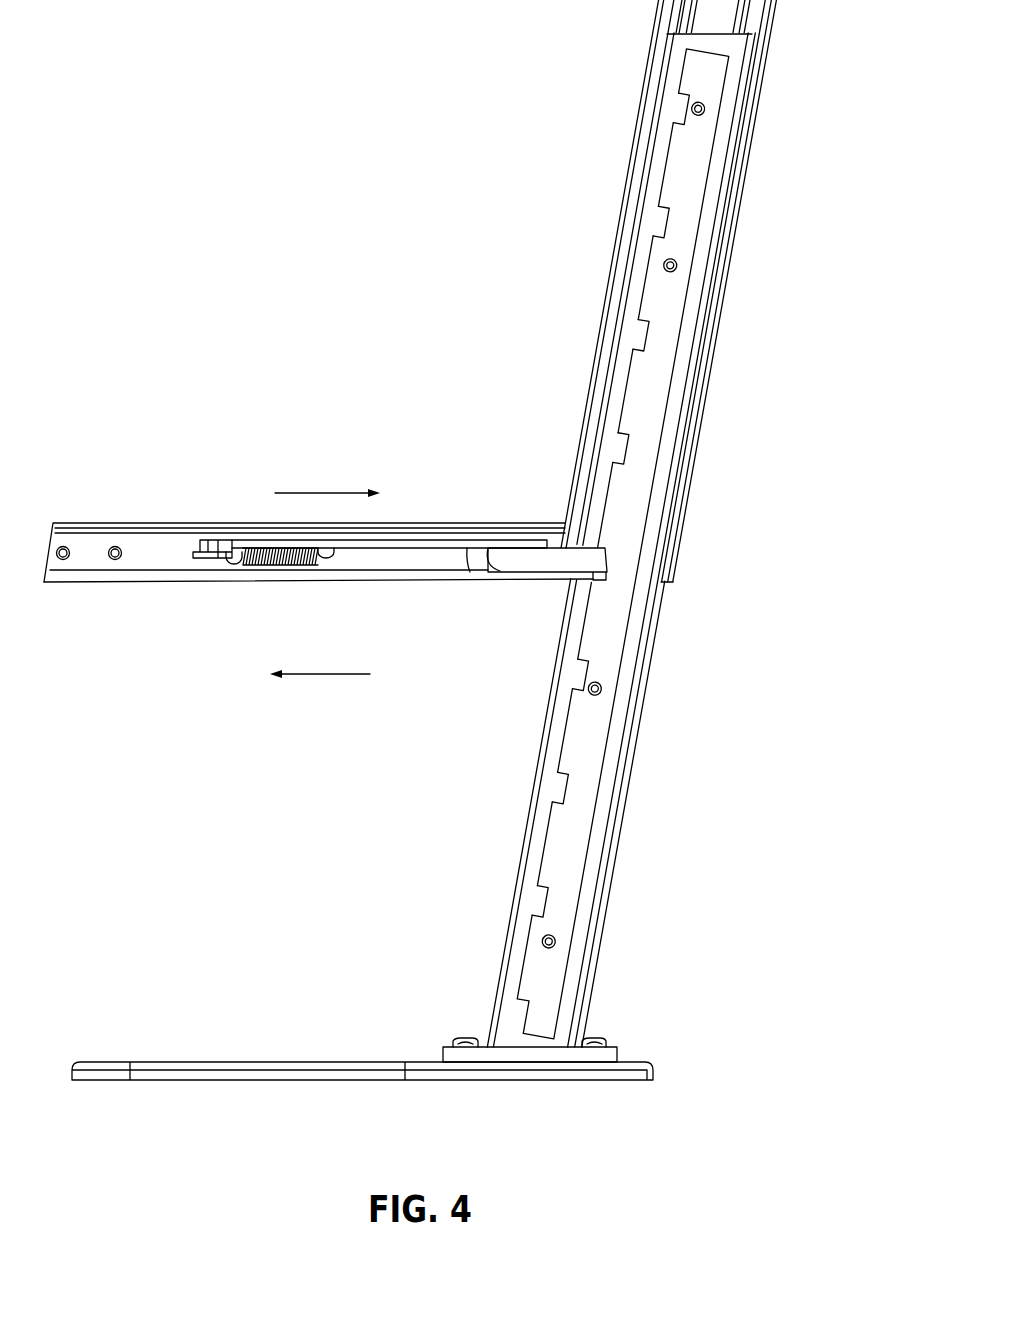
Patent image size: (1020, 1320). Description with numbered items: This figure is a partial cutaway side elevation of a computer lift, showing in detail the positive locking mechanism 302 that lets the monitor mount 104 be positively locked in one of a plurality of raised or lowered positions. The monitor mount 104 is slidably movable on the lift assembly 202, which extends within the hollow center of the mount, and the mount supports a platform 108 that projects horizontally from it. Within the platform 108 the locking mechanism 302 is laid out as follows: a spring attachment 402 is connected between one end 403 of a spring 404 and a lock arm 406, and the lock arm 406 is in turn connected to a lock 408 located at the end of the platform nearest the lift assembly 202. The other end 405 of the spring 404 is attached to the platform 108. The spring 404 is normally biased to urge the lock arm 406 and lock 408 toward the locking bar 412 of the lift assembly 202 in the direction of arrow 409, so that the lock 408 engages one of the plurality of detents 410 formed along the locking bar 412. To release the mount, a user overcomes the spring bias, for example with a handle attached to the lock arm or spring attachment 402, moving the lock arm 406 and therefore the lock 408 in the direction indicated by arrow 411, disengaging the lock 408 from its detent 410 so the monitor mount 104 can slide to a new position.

The monitor mount 104 is at (705, 478).
The platform 108 is at (132, 522).
The lift assembly 202 is at (616, 910).
The positive locking mechanism 302 is at (218, 642).
The spring attachment 402 is at (207, 560).
The end of spring 403 is at (236, 566).
The spring 404 is at (265, 576).
The other end of spring 405 is at (332, 560).
The lock arm 406 is at (470, 562).
The lock 408 is at (540, 573).
The arrow 409 is at (327, 482).
The detents 410 is at (618, 447).
The arrow 411 is at (320, 688).
The locking bar 412 is at (640, 645).